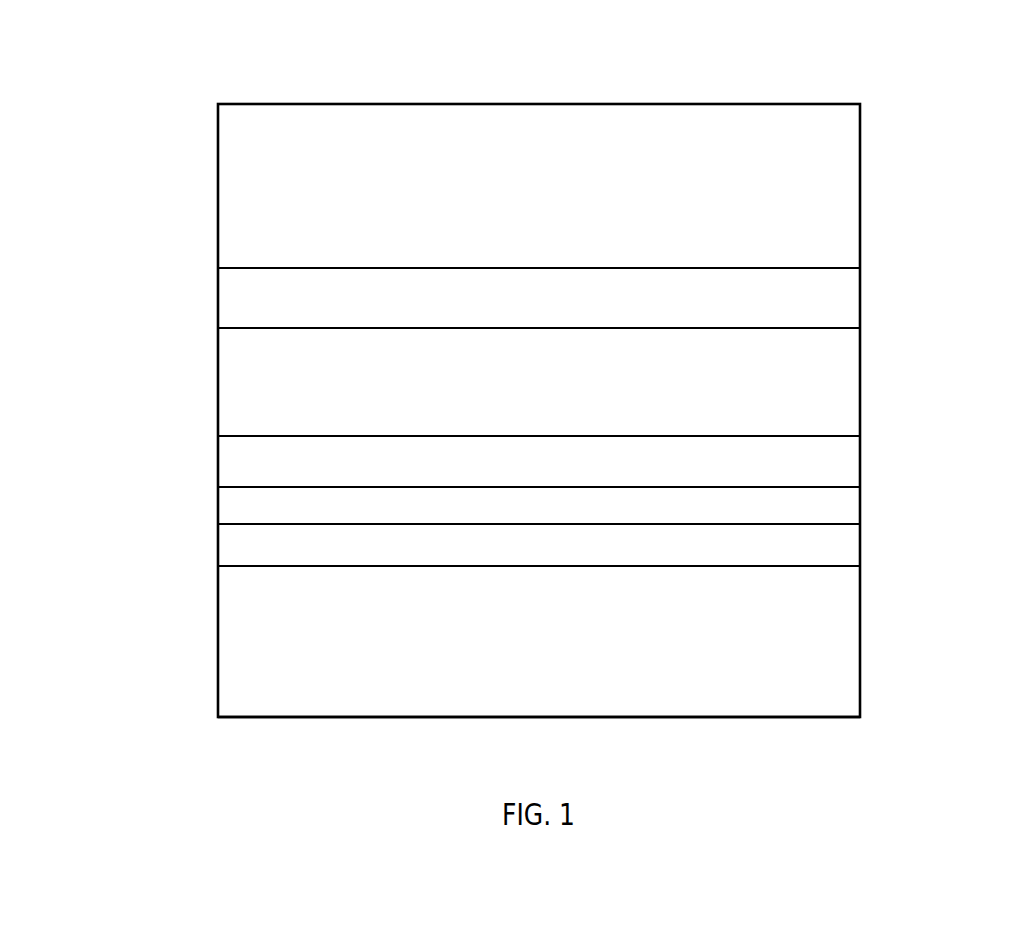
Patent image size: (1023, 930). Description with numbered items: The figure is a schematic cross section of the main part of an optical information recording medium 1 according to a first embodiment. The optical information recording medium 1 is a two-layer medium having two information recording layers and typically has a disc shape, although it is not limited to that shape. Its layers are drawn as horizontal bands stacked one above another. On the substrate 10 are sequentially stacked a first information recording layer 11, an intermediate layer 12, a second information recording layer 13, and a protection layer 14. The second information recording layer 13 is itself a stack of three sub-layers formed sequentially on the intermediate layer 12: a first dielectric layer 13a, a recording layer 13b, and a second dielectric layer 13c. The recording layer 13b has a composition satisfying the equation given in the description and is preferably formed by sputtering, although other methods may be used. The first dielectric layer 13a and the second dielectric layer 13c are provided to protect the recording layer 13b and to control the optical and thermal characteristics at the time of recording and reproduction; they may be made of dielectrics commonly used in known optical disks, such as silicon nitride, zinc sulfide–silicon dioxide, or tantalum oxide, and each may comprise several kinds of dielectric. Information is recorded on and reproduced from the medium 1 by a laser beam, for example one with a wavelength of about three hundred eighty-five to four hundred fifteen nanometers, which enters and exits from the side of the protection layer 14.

The optical information recording medium 1 is at (766, 56).
The substrate 10 is at (841, 191).
The first information recording layer 11 is at (841, 303).
The intermediate layer 12 is at (841, 386).
The second information recording layer 13 is at (873, 437).
The first dielectric layer 13a is at (228, 462).
The recording layer 13b is at (228, 502).
The second dielectric layer 13c is at (228, 547).
The protection layer 14 is at (841, 645).